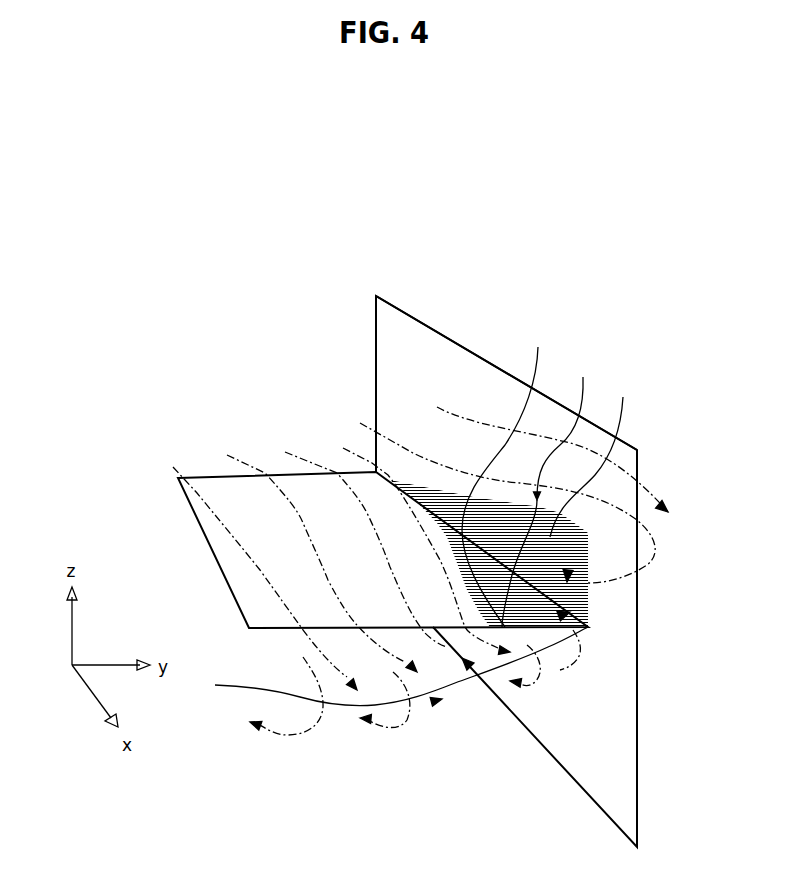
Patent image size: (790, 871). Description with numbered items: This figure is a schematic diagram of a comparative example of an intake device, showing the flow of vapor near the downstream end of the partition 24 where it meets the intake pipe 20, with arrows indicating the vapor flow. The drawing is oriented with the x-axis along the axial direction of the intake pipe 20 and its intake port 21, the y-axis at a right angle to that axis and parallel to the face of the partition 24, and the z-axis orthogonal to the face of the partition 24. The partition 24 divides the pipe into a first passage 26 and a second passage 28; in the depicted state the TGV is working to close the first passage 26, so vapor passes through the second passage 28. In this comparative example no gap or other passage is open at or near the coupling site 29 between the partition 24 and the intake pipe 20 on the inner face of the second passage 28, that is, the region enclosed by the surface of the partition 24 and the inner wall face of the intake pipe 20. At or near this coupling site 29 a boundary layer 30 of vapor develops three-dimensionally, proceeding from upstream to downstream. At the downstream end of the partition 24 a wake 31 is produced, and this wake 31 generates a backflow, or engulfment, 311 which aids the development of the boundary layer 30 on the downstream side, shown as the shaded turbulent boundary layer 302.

The intake pipe 20 is at (506, 373).
The intake port 21 is at (481, 386).
The partition 24 is at (249, 587).
The first passage 26 is at (423, 703).
The second passage 28 is at (327, 418).
The coupling site 29 is at (506, 473).
The boundary layer 30 is at (550, 487).
The turbulent boundary layer 302 is at (517, 500).
The wake 31 is at (228, 687).
The backflow 311 is at (577, 655).